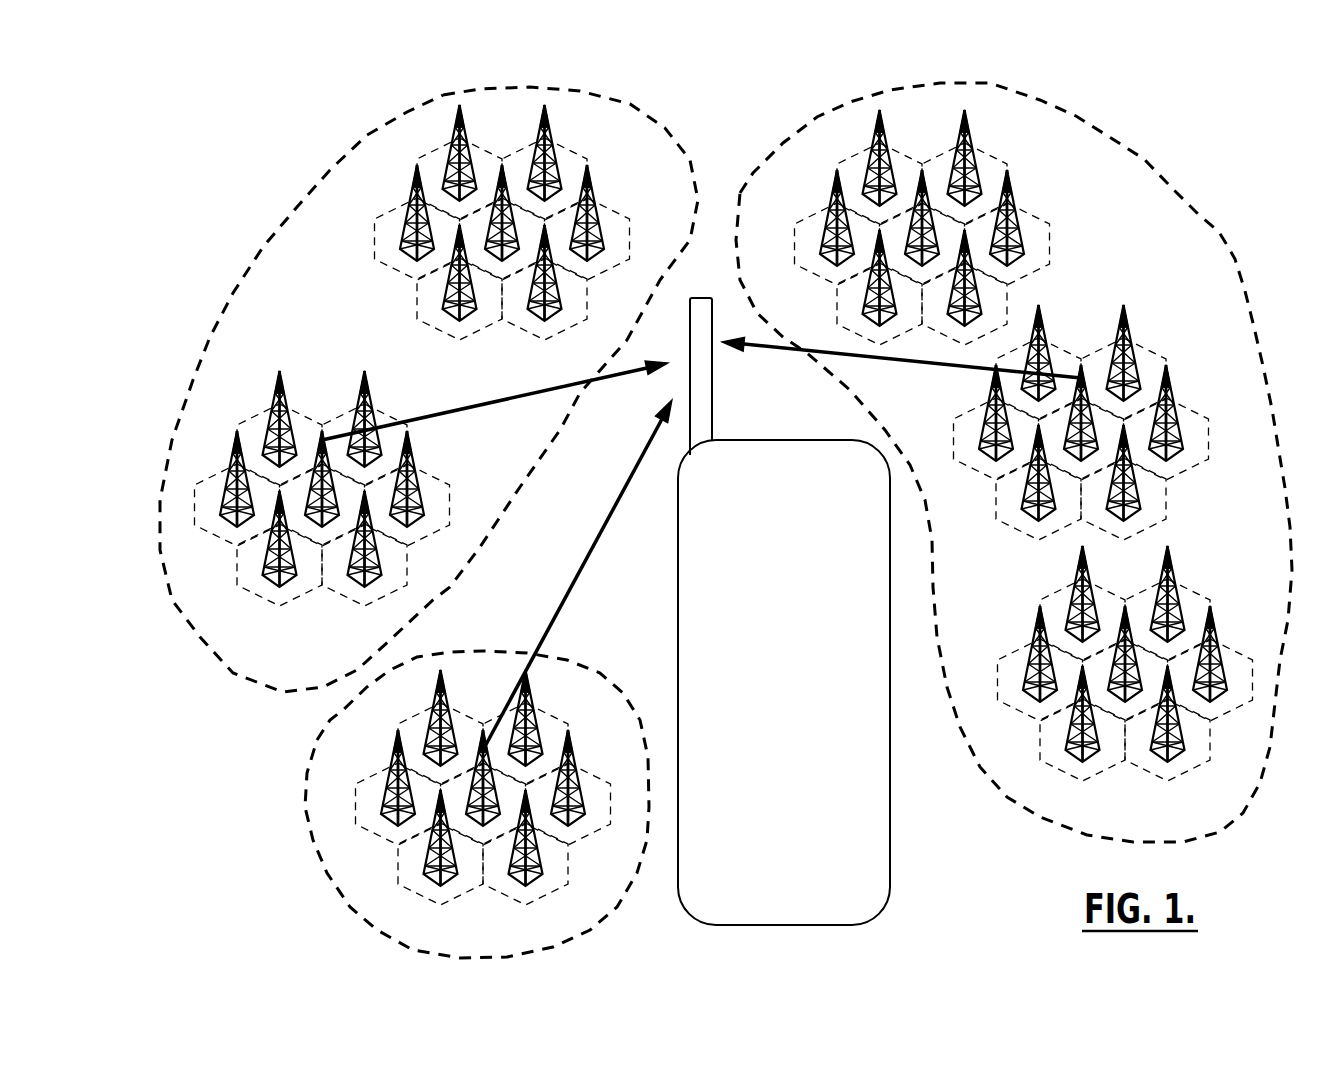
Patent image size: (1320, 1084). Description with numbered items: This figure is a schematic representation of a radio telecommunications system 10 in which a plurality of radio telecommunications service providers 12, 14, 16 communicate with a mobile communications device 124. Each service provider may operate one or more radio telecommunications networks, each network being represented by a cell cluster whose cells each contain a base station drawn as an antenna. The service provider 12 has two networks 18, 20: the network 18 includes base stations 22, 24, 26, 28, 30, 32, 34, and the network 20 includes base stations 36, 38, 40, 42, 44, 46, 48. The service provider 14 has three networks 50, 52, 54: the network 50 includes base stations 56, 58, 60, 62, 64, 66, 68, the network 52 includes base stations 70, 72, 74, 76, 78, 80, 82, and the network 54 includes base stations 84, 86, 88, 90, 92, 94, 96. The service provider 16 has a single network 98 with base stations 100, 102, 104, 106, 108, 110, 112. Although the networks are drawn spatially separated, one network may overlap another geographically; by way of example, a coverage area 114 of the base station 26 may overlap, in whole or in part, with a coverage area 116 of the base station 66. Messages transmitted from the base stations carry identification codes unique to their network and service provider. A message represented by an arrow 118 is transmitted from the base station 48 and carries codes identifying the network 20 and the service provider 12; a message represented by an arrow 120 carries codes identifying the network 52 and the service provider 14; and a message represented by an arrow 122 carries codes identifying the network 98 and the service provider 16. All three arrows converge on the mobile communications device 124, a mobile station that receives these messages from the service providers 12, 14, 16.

The radio telecommunications system 10 is at (1195, 132).
The radio telecommunications service provider 12 is at (230, 292).
The radio telecommunications service provider 14 is at (1254, 224).
The radio telecommunications service provider 16 is at (292, 752).
The radio telecommunications network 18 is at (381, 308).
The radio telecommunications network 20 is at (313, 630).
The base station 22 is at (468, 140).
The base station 24 is at (552, 140).
The base station 26 is at (592, 198).
The base station 28 is at (556, 292).
The base station 30 is at (448, 312).
The base station 32 is at (406, 252).
The base station 34 is at (490, 218).
The base station 36 is at (288, 405).
The base station 38 is at (373, 405).
The base station 40 is at (416, 462).
The base station 42 is at (378, 552).
The base station 44 is at (272, 572).
The base station 46 is at (225, 510).
The base station 48 is at (312, 488).
The radio telecommunications network 50 is at (1079, 207).
The radio telecommunications network 52 is at (1189, 337).
The radio telecommunications network 54 is at (1240, 581).
The base station 56 is at (888, 142).
The base station 58 is at (973, 142).
The base station 60 is at (1015, 197).
The base station 62 is at (980, 288).
The base station 64 is at (868, 312).
The base station 66 is at (826, 252).
The base station 68 is at (920, 225).
The base station 70 is at (1047, 340).
The base station 72 is at (1132, 342).
The base station 74 is at (1172, 397).
The base station 76 is at (1135, 490).
The base station 78 is at (1027, 512).
The base station 80 is at (985, 450).
The base station 82 is at (1077, 420).
The base station 84 is at (1091, 583).
The base station 86 is at (1177, 585).
The base station 88 is at (1218, 637).
The base station 90 is at (1182, 728).
The base station 92 is at (1073, 753).
The base station 94 is at (1027, 693).
The base station 96 is at (1113, 663).
The radio telecommunications network 98 is at (473, 922).
The base station 100 is at (452, 705).
The base station 102 is at (538, 705).
The base station 104 is at (578, 757).
The base station 106 is at (540, 853).
The base station 108 is at (432, 873).
The base station 110 is at (387, 813).
The base station 112 is at (470, 785).
The coverage area 114 is at (640, 207).
The coverage area 116 is at (810, 203).
The message 118 is at (620, 377).
The message 120 is at (786, 350).
The message 122 is at (585, 567).
The mobile communications device 124 is at (803, 731).